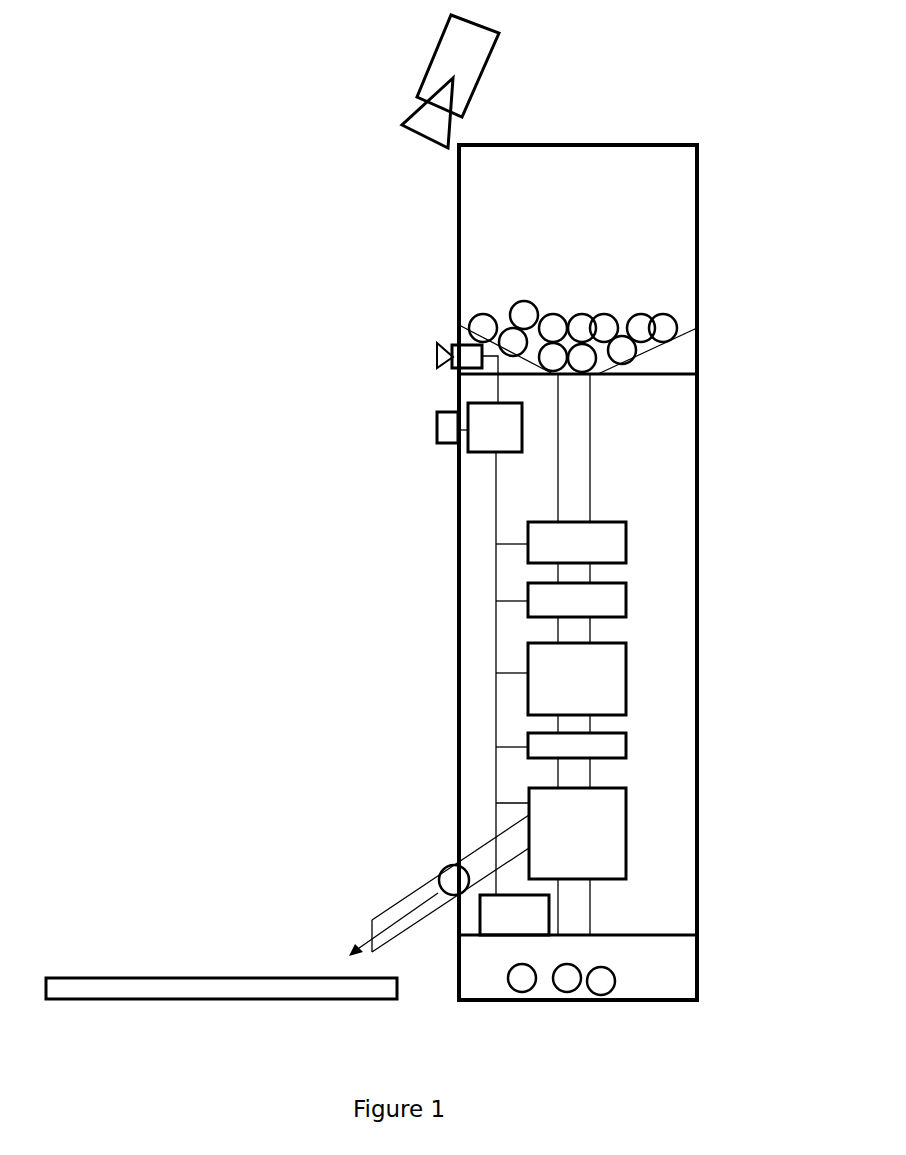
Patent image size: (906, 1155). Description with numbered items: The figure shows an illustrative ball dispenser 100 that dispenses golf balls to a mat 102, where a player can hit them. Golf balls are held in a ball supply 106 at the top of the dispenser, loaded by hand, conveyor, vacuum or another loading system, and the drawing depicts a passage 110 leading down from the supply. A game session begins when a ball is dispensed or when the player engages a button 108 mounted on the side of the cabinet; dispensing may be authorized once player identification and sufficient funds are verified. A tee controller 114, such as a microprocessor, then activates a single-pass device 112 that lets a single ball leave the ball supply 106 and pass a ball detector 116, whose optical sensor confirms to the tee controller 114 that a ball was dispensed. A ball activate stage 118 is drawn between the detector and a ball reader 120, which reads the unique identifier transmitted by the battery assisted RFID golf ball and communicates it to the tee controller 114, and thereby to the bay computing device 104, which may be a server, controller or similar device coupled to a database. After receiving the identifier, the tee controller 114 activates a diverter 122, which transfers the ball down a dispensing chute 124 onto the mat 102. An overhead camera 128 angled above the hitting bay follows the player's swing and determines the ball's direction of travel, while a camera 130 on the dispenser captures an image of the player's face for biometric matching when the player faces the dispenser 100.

The ball dispenser 100 is at (239, 300).
The mat 102 is at (165, 978).
The bay computing device 104 is at (549, 917).
The ball supply 106 is at (650, 232).
The button 108 is at (437, 425).
The ball channel 110 is at (590, 403).
The single-pass device 112 is at (626, 544).
The tee controller 114 is at (480, 453).
The ball detector 116 is at (626, 598).
The ball activate unit 118 is at (626, 677).
The ball reader 120 is at (626, 742).
The diverter 122 is at (626, 825).
The dispensing chute 124 is at (408, 892).
The overhead camera 128 is at (429, 68).
The camera 130 is at (457, 342).